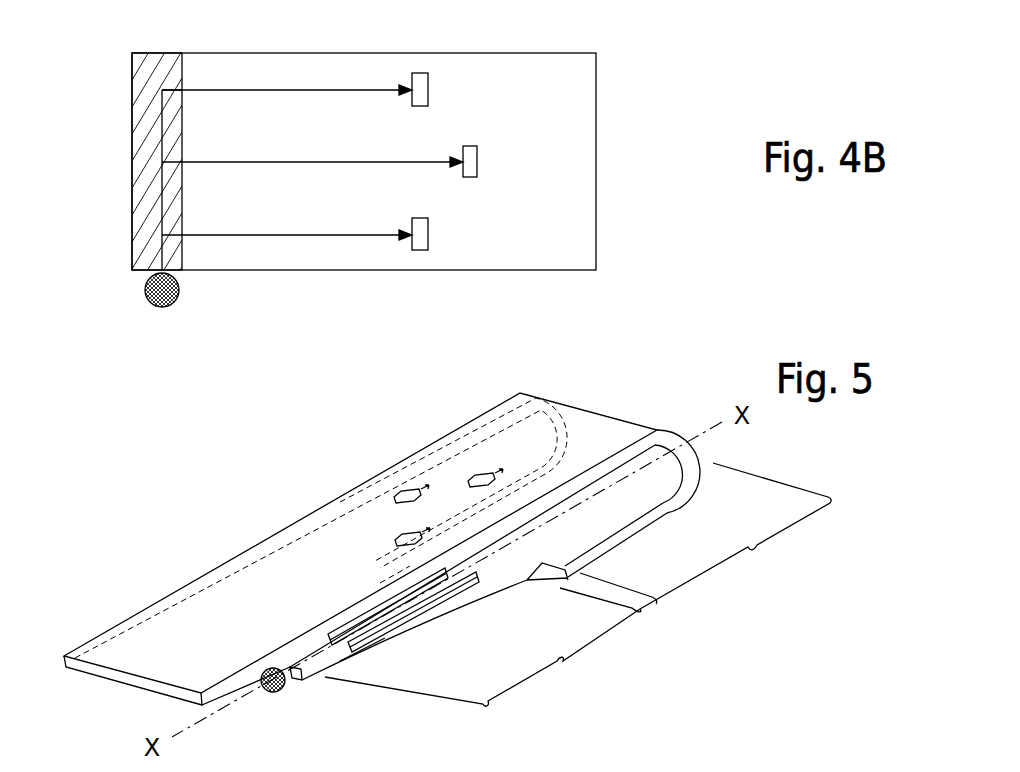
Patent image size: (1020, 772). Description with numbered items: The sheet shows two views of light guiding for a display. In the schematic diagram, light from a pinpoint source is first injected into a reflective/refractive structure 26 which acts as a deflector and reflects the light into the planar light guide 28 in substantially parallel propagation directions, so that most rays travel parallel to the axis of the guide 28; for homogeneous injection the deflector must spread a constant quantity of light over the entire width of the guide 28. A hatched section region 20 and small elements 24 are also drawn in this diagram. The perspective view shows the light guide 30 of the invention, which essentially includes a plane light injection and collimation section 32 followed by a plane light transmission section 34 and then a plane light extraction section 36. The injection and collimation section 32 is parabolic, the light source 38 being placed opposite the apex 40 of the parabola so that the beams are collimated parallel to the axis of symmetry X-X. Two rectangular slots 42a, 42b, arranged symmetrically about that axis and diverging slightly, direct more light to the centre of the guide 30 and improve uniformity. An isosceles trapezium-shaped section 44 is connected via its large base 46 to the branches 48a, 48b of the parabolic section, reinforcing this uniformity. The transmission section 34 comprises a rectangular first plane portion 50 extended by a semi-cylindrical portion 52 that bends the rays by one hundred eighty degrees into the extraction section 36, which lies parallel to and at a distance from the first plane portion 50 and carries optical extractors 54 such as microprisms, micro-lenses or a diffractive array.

In FIG. 4B, the clip cross-section detail 20 is at (157, 297).
In FIG. 4B, the contact elements 24 is at (421, 80).
In FIG. 4B, the reflective/refractive structure 26 is at (122, 170).
In FIG. 4B, the light guide 28 is at (541, 67).
In FIG. 5, the light guide 30 is at (657, 372).
In FIG. 5, the light injection and collimation section 32 is at (482, 657).
In FIG. 5, the light transmission section 34 is at (735, 536).
In FIG. 5, the light extraction section 36 is at (507, 383).
In FIG. 5, the light source 38 is at (268, 692).
In FIG. 5, the apex 40 is at (292, 682).
In FIG. 5, the rectangular slot 42a is at (427, 602).
In FIG. 5, the rectangular slot 42b is at (373, 617).
In FIG. 5, the isosceles trapezium-shaped section 44 is at (623, 604).
In FIG. 5, the large base 46 is at (503, 574).
In FIG. 5, the branch 48a is at (362, 655).
In FIG. 5, the branch 48b is at (393, 574).
In FIG. 5, the first plane portion 50 is at (598, 539).
In FIG. 5, the second semi-cylindrical portion 52 is at (575, 459).
In FIG. 5, the optical extractors 54 is at (473, 478).